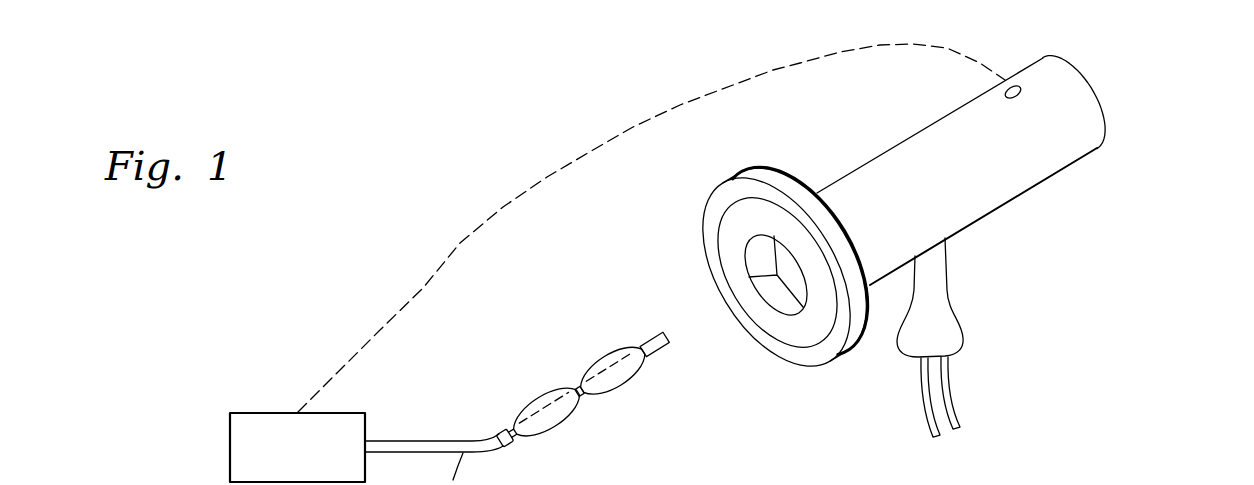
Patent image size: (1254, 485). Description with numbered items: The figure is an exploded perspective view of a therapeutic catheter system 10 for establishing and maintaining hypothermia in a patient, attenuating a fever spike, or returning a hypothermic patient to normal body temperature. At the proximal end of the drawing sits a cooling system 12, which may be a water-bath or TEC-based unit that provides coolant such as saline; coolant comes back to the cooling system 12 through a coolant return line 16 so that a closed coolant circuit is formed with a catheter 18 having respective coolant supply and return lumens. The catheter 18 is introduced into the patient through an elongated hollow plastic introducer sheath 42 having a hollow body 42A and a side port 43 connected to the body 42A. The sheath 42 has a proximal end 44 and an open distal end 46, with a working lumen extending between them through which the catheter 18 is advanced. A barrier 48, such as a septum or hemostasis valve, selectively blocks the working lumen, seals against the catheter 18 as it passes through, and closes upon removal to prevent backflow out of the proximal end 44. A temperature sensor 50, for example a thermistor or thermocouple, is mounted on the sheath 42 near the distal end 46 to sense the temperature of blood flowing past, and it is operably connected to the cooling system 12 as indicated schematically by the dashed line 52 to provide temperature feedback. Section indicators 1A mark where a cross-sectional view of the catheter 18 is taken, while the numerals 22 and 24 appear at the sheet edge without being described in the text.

The therapeutic catheter system 10 is at (695, 193).
The cooling system 12 is at (230, 434).
The coolant return line 16 is at (438, 440).
The catheter 18 is at (628, 422).
The patient body 22 is at (1138, 482).
The body vessel 24 is at (1070, 484).
The introducer sheath 42 is at (1068, 222).
The hollow body 42A is at (959, 194).
The side port 43 is at (962, 325).
The proximal end 44 is at (797, 358).
The open distal end 46 is at (1085, 80).
The barrier 48 is at (757, 261).
The temperature sensor 50 is at (1013, 99).
The dashed line 52 is at (590, 155).
The section view indicator 1A is at (580, 387).